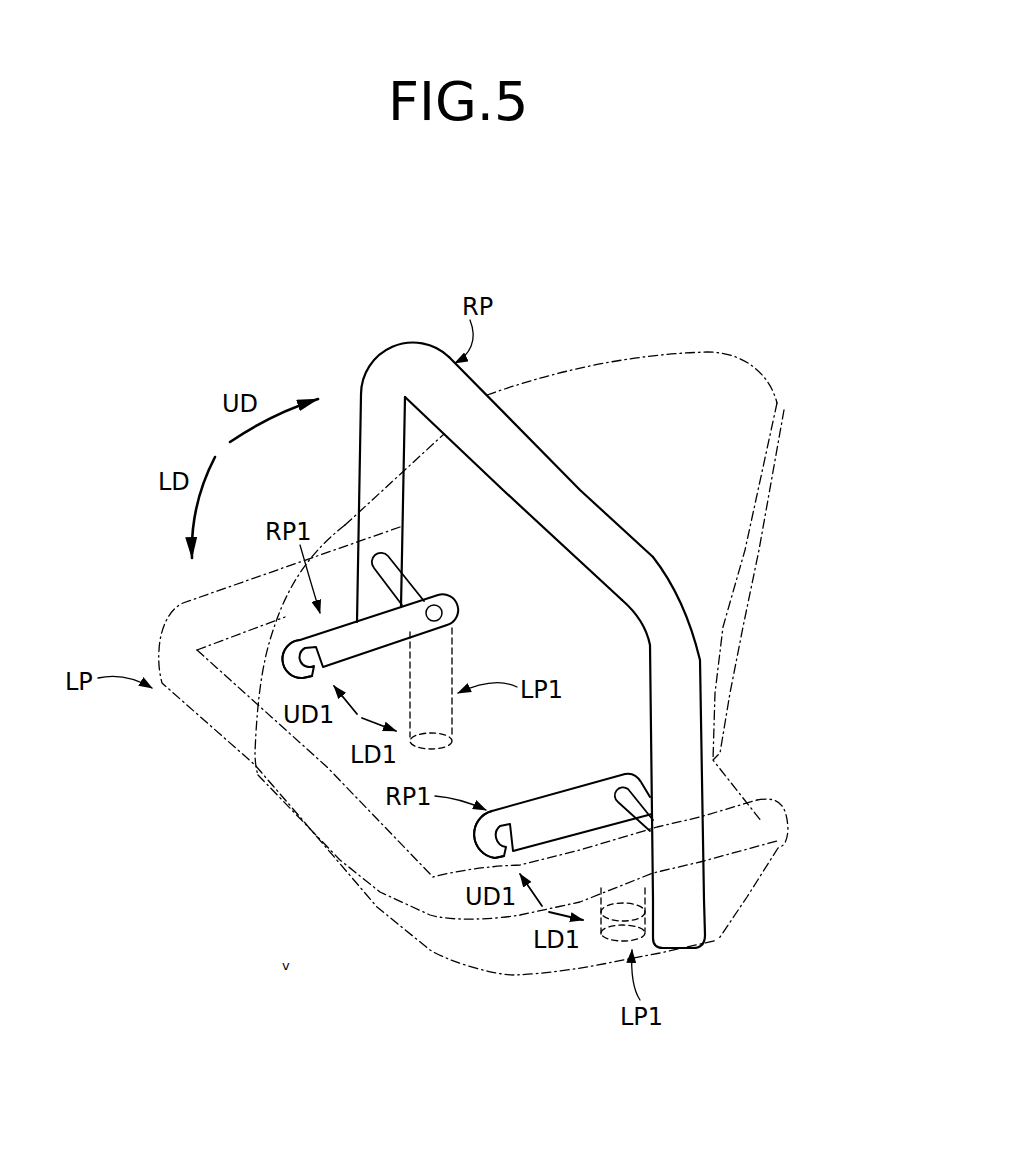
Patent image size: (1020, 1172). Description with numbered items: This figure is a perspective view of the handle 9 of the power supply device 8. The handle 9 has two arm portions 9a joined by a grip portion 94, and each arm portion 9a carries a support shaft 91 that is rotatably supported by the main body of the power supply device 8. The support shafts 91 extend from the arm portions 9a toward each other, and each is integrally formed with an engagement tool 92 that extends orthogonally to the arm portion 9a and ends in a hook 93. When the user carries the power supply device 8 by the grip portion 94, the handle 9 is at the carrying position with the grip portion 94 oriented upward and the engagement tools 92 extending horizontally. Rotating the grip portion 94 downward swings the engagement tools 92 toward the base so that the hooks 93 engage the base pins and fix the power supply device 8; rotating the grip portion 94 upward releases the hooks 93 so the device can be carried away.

The power supply device 8 is at (765, 345).
The handle 9 is at (572, 602).
The arm portion 9a is at (703, 888).
The support shaft 91 is at (412, 577).
The engagement tool 92 is at (345, 612).
The hook 93 is at (281, 655).
The grip portion 94 is at (546, 470).